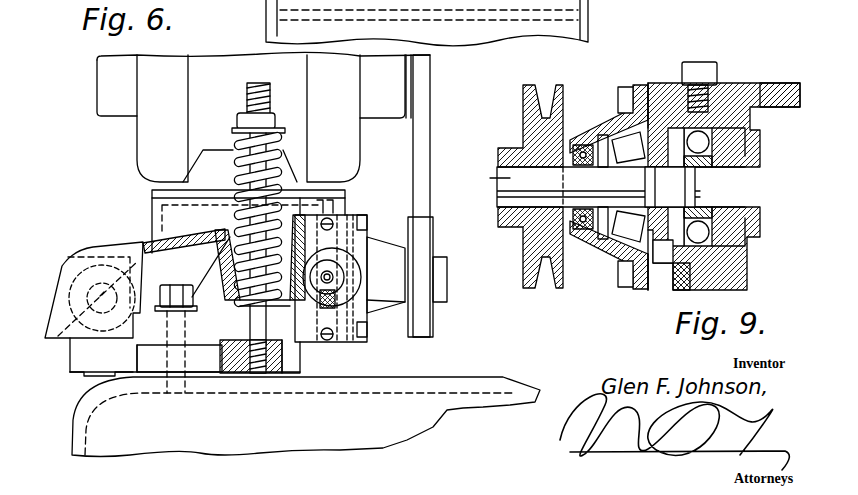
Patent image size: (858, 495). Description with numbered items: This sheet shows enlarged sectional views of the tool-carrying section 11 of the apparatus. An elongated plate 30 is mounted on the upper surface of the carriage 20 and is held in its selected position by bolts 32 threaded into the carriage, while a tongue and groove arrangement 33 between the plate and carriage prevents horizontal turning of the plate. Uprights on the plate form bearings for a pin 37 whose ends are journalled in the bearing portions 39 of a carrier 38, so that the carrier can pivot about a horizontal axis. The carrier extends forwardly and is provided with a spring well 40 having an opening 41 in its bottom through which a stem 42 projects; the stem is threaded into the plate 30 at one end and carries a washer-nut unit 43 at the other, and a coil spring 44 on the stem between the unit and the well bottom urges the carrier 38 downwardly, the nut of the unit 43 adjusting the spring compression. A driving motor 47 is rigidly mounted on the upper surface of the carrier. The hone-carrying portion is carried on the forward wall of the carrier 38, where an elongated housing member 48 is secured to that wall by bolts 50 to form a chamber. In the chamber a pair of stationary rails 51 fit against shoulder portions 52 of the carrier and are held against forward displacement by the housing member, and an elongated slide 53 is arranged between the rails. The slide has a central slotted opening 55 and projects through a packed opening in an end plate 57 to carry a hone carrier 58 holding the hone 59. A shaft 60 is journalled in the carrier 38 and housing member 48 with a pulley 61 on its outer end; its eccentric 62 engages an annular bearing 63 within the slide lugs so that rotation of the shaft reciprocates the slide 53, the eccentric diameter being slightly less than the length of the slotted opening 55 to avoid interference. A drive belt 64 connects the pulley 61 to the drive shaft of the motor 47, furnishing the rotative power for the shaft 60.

In FIG. 6, the tool-carrying section 11 is at (359, 209).
In FIG. 9, the tool-carrying section 11 is at (644, 76).
In FIG. 6, the carriage 20 is at (499, 374).
In FIG. 6, the elongated plate 30 is at (205, 360).
In FIG. 6, the bolts 32 is at (175, 288).
In FIG. 6, the tongue and groove arrangement 33 is at (93, 380).
In FIG. 6, the pin 37 is at (89, 290).
In FIG. 6, the carrier 38 is at (154, 222).
In FIG. 9, the carrier 38 is at (775, 84).
In FIG. 6, the bearing portions 39 is at (70, 338).
In FIG. 6, the spring well 40 is at (218, 259).
In FIG. 6, the opening 41 is at (238, 307).
In FIG. 6, the stem 42 is at (256, 326).
In FIG. 6, the washer-nut unit 43 is at (272, 120).
In FIG. 6, the coil spring 44 is at (237, 176).
In FIG. 6, the driving motor 47 is at (143, 139).
In FIG. 6, the housing member 48 is at (368, 235).
In FIG. 9, the housing member 48 is at (602, 240).
In FIG. 6, the bolts 50 is at (364, 221).
In FIG. 9, the bolts 50 is at (626, 87).
In FIG. 9, the rails 51 is at (673, 112).
In FIG. 9, the shoulder portions 52 is at (725, 108).
In FIG. 9, the slide 53 is at (710, 146).
In FIG. 9, the slotted opening 55 is at (700, 168).
In FIG. 6, the end plate 57 is at (361, 257).
In FIG. 6, the hone carrier 58 is at (344, 283).
In FIG. 6, the hone 59 is at (330, 309).
In FIG. 6, the shaft 60 is at (407, 307).
In FIG. 9, the shaft 60 is at (500, 182).
In FIG. 6, the pulley 61 is at (432, 244).
In FIG. 9, the pulley 61 is at (528, 242).
In FIG. 9, the eccentric 62 is at (670, 187).
In FIG. 9, the annular bearing 63 is at (650, 287).
In FIG. 6, the drive belt 64 is at (418, 168).